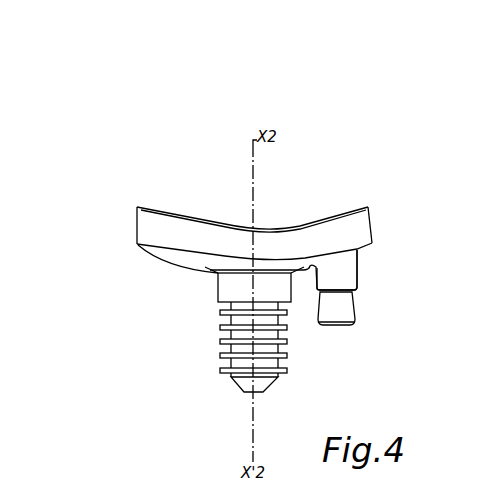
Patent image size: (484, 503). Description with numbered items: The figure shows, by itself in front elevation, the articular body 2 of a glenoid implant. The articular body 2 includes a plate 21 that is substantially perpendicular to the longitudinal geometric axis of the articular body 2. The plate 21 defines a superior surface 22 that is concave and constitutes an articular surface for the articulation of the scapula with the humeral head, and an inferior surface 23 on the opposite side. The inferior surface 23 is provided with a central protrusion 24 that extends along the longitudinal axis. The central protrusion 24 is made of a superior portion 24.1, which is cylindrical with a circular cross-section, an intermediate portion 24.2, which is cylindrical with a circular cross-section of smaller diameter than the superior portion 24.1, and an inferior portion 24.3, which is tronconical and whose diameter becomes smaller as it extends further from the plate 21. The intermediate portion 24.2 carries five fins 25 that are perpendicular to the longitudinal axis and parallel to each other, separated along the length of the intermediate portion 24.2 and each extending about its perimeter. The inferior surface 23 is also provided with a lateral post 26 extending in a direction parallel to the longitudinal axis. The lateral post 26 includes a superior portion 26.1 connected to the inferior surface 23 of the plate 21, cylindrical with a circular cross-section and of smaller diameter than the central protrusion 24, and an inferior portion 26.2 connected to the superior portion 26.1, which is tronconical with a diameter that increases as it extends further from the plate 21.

The articular body 2 is at (125, 190).
The plate 21 is at (365, 231).
The superior surface 22 is at (329, 213).
The inferior surface 23 is at (166, 261).
The central protrusion 24 is at (142, 317).
The superior portion 24.1 is at (228, 297).
The intermediate portion 24.2 is at (238, 334).
The inferior portion 24.3 is at (247, 390).
The fins 25 is at (287, 325).
The lateral post 26 is at (442, 273).
The superior portion 26.1 is at (345, 275).
The inferior portion 26.2 is at (337, 308).